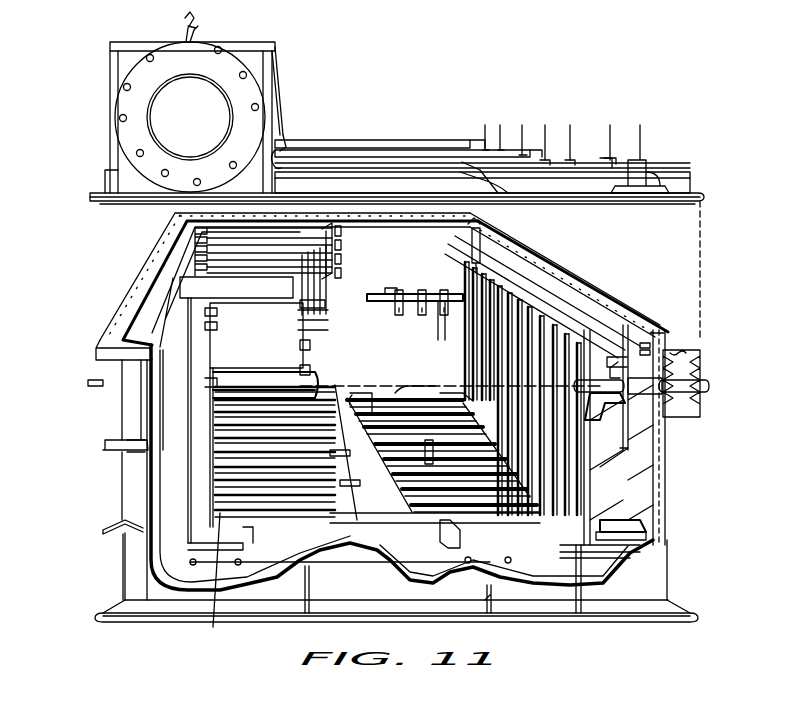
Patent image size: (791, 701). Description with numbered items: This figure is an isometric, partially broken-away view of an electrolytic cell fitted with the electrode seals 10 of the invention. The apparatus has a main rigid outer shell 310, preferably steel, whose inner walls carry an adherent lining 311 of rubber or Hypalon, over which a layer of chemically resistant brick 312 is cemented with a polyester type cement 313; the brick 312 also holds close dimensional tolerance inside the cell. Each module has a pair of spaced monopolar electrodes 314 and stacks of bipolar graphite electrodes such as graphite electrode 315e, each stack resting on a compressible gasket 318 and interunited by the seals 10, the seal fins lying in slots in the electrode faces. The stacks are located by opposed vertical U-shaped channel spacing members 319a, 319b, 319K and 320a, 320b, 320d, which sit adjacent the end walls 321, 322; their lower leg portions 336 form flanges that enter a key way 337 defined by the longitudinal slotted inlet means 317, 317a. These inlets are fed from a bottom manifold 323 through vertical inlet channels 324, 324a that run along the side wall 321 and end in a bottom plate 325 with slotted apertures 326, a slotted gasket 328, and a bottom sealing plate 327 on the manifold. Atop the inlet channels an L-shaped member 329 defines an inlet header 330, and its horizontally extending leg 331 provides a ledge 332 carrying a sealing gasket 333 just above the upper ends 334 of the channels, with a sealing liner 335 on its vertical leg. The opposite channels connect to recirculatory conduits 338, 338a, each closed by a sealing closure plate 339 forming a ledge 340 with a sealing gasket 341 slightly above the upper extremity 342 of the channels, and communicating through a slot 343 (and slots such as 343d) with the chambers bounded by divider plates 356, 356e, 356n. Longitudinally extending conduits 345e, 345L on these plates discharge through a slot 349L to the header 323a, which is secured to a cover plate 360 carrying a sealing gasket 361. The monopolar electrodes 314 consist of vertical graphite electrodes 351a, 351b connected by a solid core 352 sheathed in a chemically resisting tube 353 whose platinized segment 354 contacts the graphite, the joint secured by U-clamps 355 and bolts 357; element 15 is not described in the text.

The electrode seal 10 is at (342, 450).
The lower module 15 is at (356, 484).
The outer shell 310 is at (660, 457).
The lining 311 is at (660, 428).
The chemically resistant brick 312 is at (660, 482).
The polyester type cement 313 is at (660, 466).
The monopolar electrode 314 is at (410, 376).
The graphite electrode 315e is at (320, 394).
The slotted inlet means 317 is at (396, 434).
The slat tab 317a is at (418, 464).
The gasket 318 is at (378, 558).
The U-shaped channel spacing member 319a is at (620, 298).
The U-shaped channel spacing member 319b is at (600, 252).
The U-shaped channel spacing member 319K is at (502, 248).
The U-shaped channel spacing member 320a is at (216, 322).
The U-shaped channel spacing member 320b is at (217, 318).
The block rib 320d is at (200, 302).
The end wall 321 is at (628, 448).
The end wall 322 is at (88, 382).
The bottom manifold 323 is at (420, 478).
The header 323a is at (278, 142).
The inlet channel 324 is at (655, 413).
The inlet channel 324a is at (700, 374).
The bottom plate 325 is at (646, 536).
The slotted apertures 326 is at (640, 520).
The bottom sealing plate 327 is at (640, 558).
The slotted gasket 328 is at (640, 548).
The L-shaped member 329 is at (660, 308).
The inlet header 330 is at (610, 278).
The horizontally extending leg 331 is at (650, 344).
The ledge 332 is at (650, 356).
The sealing gasket 333 is at (562, 258).
The upper ends 334 is at (662, 290).
The sealing liner 335 is at (666, 328).
The lower portions of the legs 336 is at (579, 616).
The key way 337 is at (214, 616).
The recirculatory conduit 338 is at (166, 406).
The recirculatory conduit 338a is at (118, 450).
The sealing closure plate 339 is at (162, 390).
The ledge 340 is at (160, 372).
The sealing gasket 341 is at (186, 347).
The upper extremity 342 is at (190, 324).
The slot 343 is at (192, 312).
The seal block 343d is at (205, 298).
The longitudinally extending conduit 345e is at (340, 304).
The longitudinally extending conduit 345L is at (340, 238).
The slot 349L is at (178, 228).
The graphite electrode 351a is at (440, 312).
The graphite electrode 351b is at (386, 304).
The solid core 352 is at (366, 295).
The chemically resisting tube 353 is at (405, 290).
The platinized segment 354 is at (368, 300).
The U-clamp 355 is at (400, 290).
The divider plate 356 is at (426, 318).
The divider plate 356e is at (310, 372).
The divider plate 356n is at (310, 350).
The bolts 357 is at (490, 228).
The cover plate 360 is at (95, 196).
The sealing gasket 361 is at (118, 201).